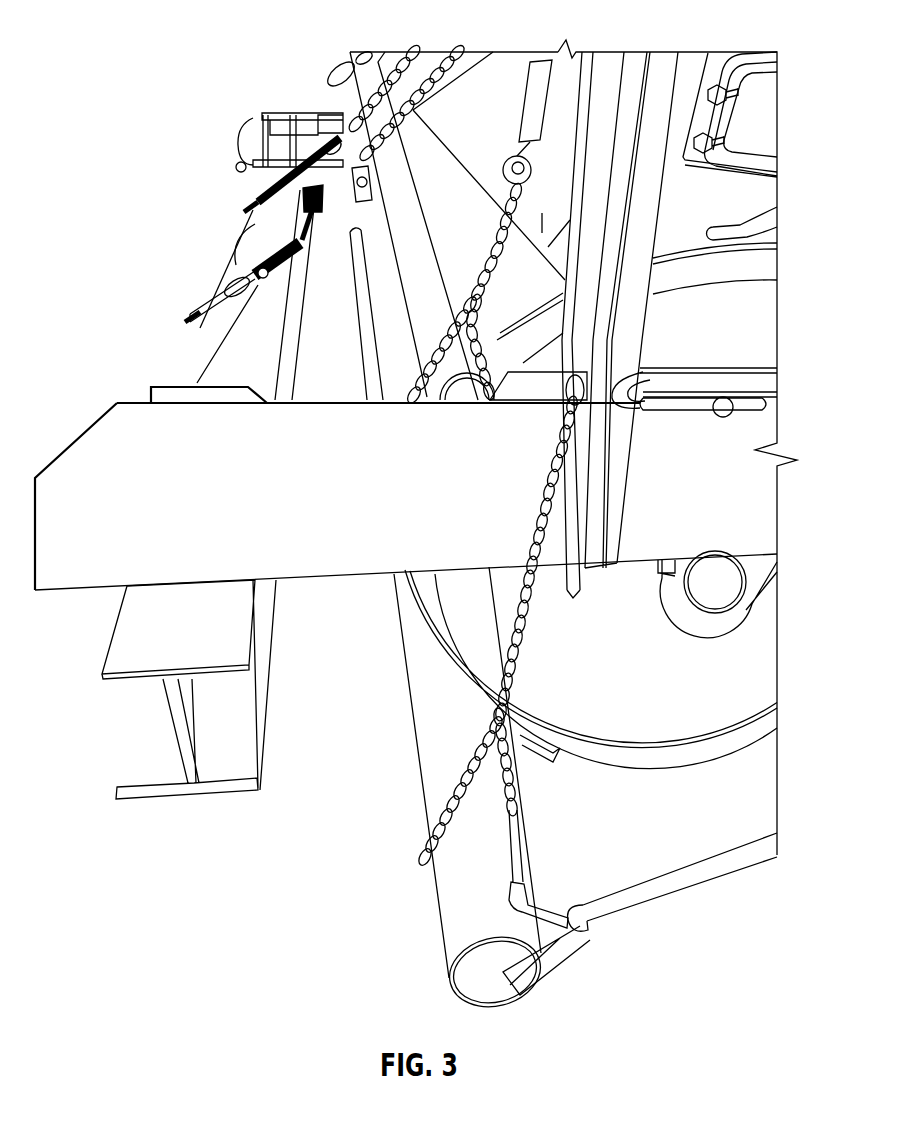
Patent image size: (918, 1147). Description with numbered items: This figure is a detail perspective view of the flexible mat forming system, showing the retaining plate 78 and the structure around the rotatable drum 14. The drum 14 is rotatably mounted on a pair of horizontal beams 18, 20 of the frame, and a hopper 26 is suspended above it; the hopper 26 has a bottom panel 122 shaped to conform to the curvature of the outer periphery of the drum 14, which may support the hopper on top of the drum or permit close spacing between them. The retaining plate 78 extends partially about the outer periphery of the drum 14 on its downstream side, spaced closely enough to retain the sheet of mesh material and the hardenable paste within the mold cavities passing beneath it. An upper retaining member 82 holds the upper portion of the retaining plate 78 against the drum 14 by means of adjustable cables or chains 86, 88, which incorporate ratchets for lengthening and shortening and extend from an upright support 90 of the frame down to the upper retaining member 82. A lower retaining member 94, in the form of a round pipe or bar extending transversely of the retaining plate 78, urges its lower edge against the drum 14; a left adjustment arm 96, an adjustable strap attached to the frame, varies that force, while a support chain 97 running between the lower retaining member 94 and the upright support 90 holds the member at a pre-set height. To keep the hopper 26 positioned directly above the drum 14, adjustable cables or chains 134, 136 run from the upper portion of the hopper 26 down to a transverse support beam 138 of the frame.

The drum 14 is at (657, 730).
The horizontal beam 18 is at (360, 558).
The horizontal beam 20 is at (270, 116).
The hopper 26 is at (736, 211).
The retaining plate 78 is at (385, 344).
The upper retaining member 82 is at (402, 234).
The adjustable cable or chain 86 is at (526, 115).
The adjustable cable or chain 88 is at (352, 82).
The upright support 90 is at (580, 268).
The lower retaining member 94 is at (450, 902).
The left adjustment arm 96 is at (665, 887).
The support chain 97 is at (534, 612).
The bottom panel 122 is at (530, 240).
The adjustable cable or chain 134 is at (393, 166).
The adjustable cable or chain 136 is at (266, 196).
The transverse support beam 138 is at (212, 358).